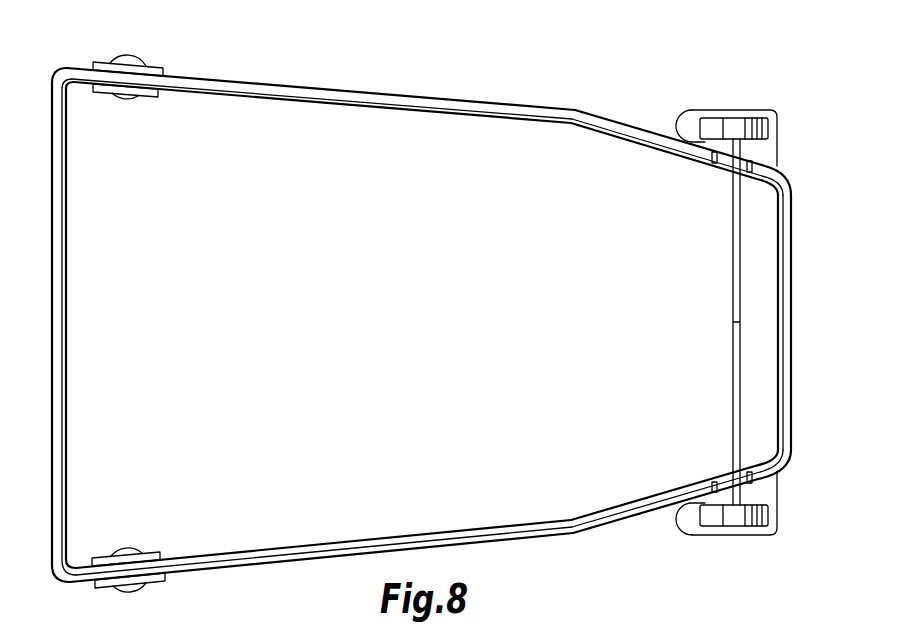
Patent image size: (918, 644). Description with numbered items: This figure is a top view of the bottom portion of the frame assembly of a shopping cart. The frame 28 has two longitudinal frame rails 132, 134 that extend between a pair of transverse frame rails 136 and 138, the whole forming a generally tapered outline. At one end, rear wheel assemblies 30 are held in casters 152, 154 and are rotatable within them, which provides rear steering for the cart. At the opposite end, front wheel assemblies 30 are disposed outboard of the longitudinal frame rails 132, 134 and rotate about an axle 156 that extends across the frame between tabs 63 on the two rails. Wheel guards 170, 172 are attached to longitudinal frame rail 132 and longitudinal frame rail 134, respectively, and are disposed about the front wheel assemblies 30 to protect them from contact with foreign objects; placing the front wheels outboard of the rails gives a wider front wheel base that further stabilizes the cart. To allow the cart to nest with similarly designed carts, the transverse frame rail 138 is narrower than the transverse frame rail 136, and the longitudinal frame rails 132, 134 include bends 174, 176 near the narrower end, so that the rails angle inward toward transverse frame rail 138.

The frame 28 is at (451, 325).
The wheel assemblies 30 is at (88, 92).
The tabs 63 is at (723, 166).
The longitudinal frame rail 132 is at (385, 538).
The longitudinal frame rail 134 is at (355, 103).
The transverse frame rail 136 is at (63, 292).
The transverse frame rail 138 is at (792, 320).
The caster 152 is at (155, 555).
The caster 154 is at (158, 93).
The axle 156 is at (732, 314).
The wheel guard 170 is at (755, 537).
The wheel guard 172 is at (755, 108).
The bend 174 is at (573, 537).
The bend 176 is at (575, 108).